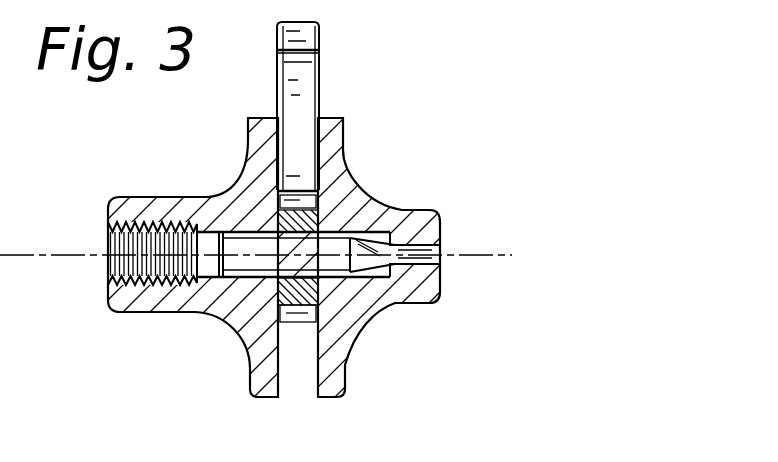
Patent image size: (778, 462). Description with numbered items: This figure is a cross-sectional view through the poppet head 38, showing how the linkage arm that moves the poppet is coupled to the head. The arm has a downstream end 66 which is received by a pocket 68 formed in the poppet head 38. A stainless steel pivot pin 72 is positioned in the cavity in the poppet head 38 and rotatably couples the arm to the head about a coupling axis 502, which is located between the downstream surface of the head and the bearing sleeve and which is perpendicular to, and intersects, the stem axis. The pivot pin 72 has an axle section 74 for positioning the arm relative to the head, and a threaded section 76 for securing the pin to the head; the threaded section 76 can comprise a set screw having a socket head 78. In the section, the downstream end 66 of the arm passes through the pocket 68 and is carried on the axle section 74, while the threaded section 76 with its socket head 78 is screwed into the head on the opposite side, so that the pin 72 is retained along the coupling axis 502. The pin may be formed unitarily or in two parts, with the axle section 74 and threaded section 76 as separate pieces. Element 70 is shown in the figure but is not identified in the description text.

The poppet head 38 is at (336, 177).
The downstream end 66 is at (320, 66).
The pivot pin 72 is at (402, 212).
The socket head 78 is at (110, 280).
The threaded section 76 is at (146, 286).
The axle section 74 is at (246, 268).
The conical tip 70 is at (340, 282).
The coupling axis 502 is at (470, 250).
The pocket 68 is at (302, 360).